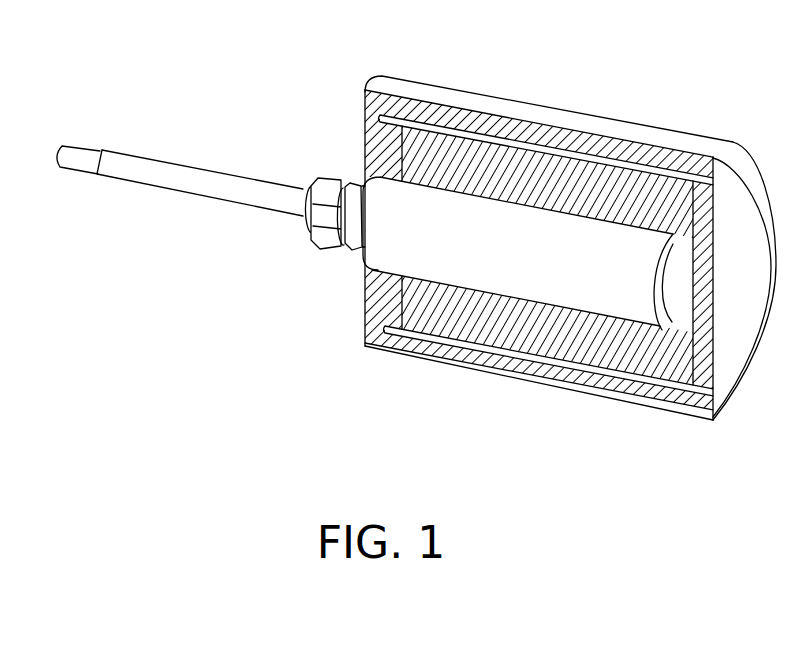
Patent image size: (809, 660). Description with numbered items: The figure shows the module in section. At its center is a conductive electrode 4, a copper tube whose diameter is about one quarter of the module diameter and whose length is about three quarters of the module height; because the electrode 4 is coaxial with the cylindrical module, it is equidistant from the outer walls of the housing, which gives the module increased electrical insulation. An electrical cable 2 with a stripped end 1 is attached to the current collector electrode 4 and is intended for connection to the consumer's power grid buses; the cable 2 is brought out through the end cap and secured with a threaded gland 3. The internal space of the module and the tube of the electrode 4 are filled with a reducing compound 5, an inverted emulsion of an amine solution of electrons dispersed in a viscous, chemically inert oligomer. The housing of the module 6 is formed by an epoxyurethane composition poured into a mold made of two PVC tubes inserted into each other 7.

The stripped end 1 is at (83, 160).
The electrical cable 2 is at (180, 177).
The threaded gland 3 is at (322, 207).
The conductive electrode 4 is at (410, 213).
The reducing compound 5 is at (452, 153).
The housing of the module 6 is at (543, 135).
The PVC tubes inserted into each other 7 is at (655, 138).